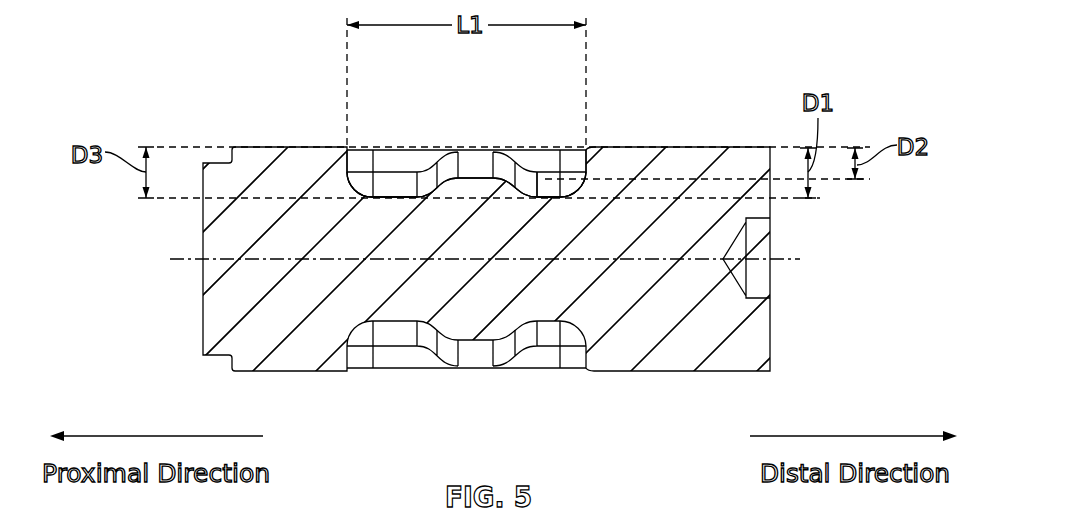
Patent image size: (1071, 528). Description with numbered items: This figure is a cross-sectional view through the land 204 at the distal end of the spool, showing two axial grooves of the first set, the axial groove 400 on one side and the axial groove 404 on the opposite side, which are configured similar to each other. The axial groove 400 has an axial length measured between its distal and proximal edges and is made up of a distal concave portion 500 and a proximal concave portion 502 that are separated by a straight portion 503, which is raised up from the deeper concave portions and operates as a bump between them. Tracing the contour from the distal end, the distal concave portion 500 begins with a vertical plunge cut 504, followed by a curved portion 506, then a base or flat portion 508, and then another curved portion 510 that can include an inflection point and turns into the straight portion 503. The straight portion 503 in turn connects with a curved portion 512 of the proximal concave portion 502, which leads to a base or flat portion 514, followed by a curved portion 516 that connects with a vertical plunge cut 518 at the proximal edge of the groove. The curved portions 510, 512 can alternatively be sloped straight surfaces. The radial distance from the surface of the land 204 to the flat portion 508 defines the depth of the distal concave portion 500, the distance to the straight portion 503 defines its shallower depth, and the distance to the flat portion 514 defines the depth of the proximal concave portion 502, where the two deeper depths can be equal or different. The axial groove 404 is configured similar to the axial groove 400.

The land 204 is at (243, 147).
The axial groove 400 is at (360, 146).
The axial groove 404 is at (360, 382).
The distal concave portion 500 is at (543, 166).
The proximal concave portion 502 is at (410, 166).
The straight portion 503 is at (478, 166).
The vertical plunge cut 504 is at (589, 156).
The curved portion 506 is at (590, 194).
The flat portion 508 is at (549, 204).
The curved portion 510 is at (512, 192).
The curved portion 512 is at (428, 195).
The flat portion 514 is at (347, 193).
The curved portion 516 is at (397, 198).
The vertical plunge cut 518 is at (366, 196).